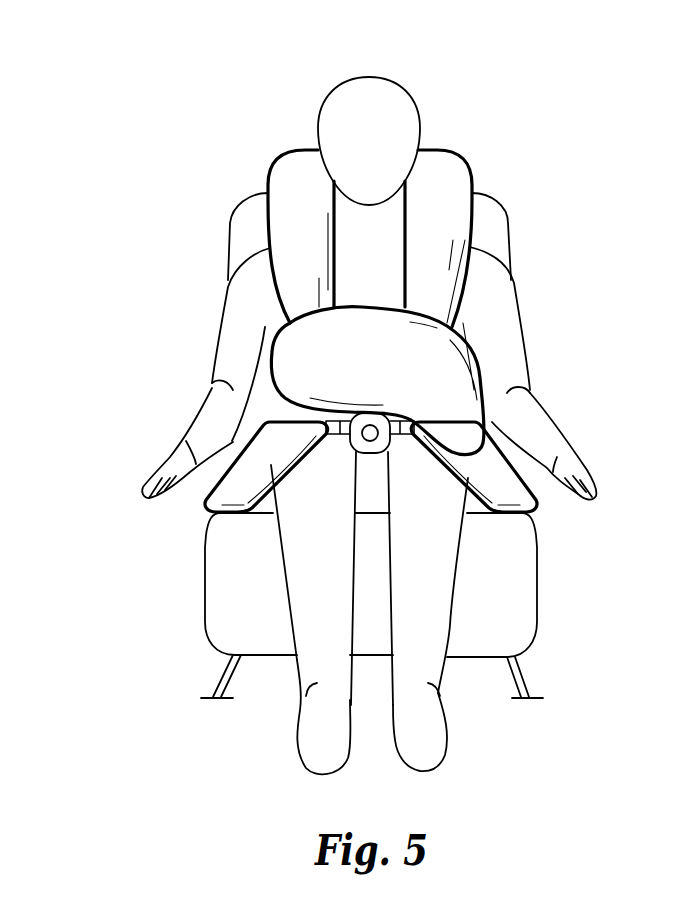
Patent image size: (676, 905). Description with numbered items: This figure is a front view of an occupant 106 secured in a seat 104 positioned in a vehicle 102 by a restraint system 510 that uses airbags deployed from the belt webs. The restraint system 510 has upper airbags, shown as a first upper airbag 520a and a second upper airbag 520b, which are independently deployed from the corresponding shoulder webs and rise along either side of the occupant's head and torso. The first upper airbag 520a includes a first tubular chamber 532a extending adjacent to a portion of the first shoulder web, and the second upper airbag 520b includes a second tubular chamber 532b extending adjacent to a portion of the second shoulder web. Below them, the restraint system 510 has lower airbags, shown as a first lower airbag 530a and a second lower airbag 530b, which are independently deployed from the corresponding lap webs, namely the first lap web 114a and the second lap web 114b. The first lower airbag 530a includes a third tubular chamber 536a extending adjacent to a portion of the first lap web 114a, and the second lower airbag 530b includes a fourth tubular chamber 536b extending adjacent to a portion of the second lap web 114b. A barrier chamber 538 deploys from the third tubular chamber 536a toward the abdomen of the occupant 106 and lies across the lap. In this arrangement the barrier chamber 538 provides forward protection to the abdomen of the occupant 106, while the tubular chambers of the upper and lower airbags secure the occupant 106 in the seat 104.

The vehicle 102 is at (549, 770).
The seat 104 is at (527, 630).
The occupant 106 is at (450, 580).
The first lap web 114a is at (510, 515).
The second lap web 114b is at (213, 514).
The restraint system 510 is at (184, 152).
The first upper airbag 520a is at (488, 147).
The second upper airbag 520b is at (252, 147).
The first lower airbag 530a is at (435, 499).
The second lower airbag 530b is at (298, 500).
The first tubular chamber 532a is at (447, 220).
The second tubular chamber 532b is at (297, 247).
The third tubular chamber 536a is at (497, 463).
The fourth tubular chamber 536b is at (230, 447).
The barrier chamber 538 is at (443, 376).